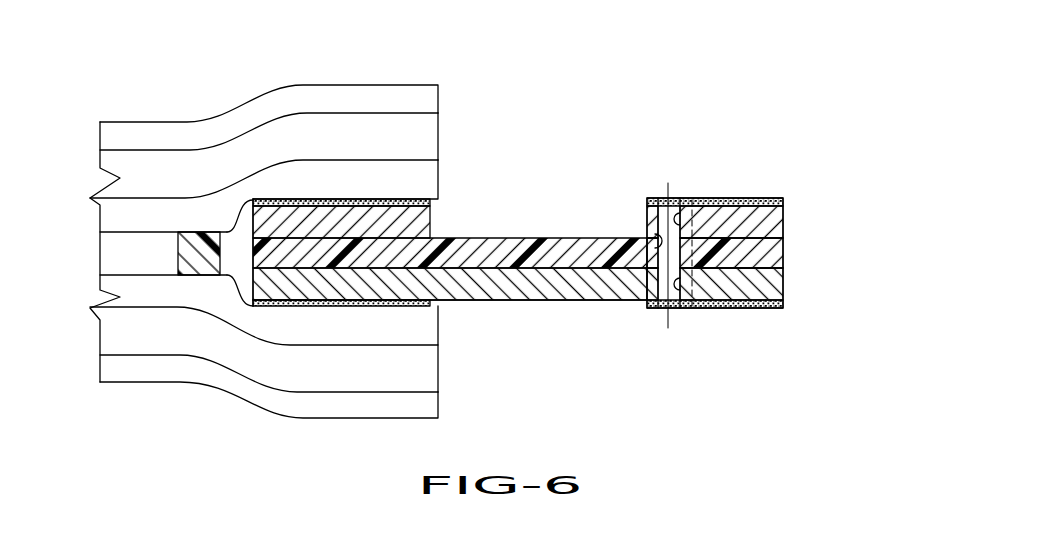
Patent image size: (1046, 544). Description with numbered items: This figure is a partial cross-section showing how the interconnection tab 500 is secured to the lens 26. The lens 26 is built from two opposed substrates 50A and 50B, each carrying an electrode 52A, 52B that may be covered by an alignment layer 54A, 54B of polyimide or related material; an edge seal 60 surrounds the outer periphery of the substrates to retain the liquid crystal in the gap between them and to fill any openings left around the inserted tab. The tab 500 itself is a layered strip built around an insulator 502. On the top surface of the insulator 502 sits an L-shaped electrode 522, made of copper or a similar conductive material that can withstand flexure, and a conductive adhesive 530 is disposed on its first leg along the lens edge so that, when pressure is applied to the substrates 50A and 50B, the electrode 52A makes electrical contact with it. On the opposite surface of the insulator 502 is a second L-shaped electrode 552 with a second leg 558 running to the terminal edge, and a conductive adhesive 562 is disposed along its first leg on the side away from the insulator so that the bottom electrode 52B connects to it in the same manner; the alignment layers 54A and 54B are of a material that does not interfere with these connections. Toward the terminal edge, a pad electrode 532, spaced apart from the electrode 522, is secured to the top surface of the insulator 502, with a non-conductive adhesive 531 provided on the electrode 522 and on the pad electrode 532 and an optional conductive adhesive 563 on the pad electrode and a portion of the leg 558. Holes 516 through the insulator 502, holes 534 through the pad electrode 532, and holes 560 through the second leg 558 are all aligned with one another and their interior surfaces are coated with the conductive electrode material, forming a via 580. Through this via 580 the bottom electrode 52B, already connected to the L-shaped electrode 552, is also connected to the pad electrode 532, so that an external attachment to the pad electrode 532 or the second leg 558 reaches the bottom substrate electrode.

The lens 26 is at (401, 82).
The substrate 50A is at (438, 97).
The electrode 52A is at (438, 135).
The alignment layer 54A is at (438, 180).
The alignment layer 54B is at (438, 325).
The bottom electrode 52B is at (438, 370).
The substrate 50B is at (438, 410).
The edge seal 60 is at (190, 238).
The L-shaped electrode 522 is at (249, 206).
The conductive adhesive 530 is at (335, 205).
The insulator 502 is at (786, 252).
The L-shaped electrode 552 is at (786, 287).
The conductive adhesive 562 is at (335, 306).
The second leg 558 is at (607, 301).
The interconnection tab 500 is at (748, 179).
The non-conductive adhesive 531 is at (767, 197).
The pad electrode 532 is at (786, 220).
The conductive adhesive 563 is at (767, 306).
The via 580 is at (664, 310).
The holes 516 is at (651, 241).
The holes 534 is at (683, 211).
The holes 560 is at (681, 292).